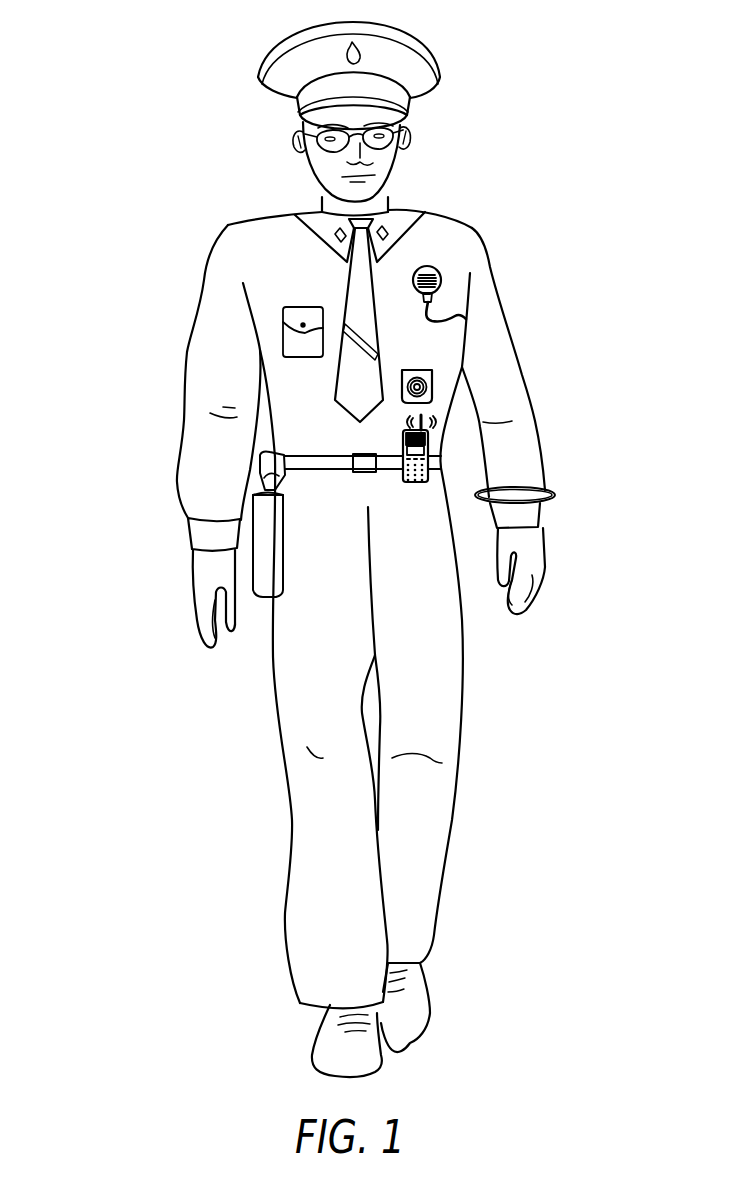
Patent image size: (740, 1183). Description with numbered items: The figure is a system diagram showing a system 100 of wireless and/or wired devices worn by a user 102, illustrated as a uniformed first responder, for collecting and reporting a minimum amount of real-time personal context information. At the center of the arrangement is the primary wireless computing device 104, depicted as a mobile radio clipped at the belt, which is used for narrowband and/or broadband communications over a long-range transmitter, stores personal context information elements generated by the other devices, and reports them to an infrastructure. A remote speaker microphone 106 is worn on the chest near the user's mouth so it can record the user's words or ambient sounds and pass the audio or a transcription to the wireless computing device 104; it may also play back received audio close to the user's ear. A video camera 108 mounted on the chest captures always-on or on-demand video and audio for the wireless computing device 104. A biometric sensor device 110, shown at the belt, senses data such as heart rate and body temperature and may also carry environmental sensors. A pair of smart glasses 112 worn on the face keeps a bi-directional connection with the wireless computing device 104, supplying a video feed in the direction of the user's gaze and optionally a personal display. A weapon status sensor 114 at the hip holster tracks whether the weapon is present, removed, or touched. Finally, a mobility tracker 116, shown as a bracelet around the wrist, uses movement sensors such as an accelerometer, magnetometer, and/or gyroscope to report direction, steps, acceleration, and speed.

The system 100 is at (82, 102).
The user 102 is at (461, 215).
The primary wireless computing device 104 is at (428, 433).
The remote speaker microphone 106 is at (443, 274).
The video camera 108 is at (433, 373).
The biometric sensor device 110 is at (338, 462).
The smart glasses 112 is at (399, 125).
The weapon status sensor 114 is at (267, 569).
The mobility tracker 116 is at (550, 487).